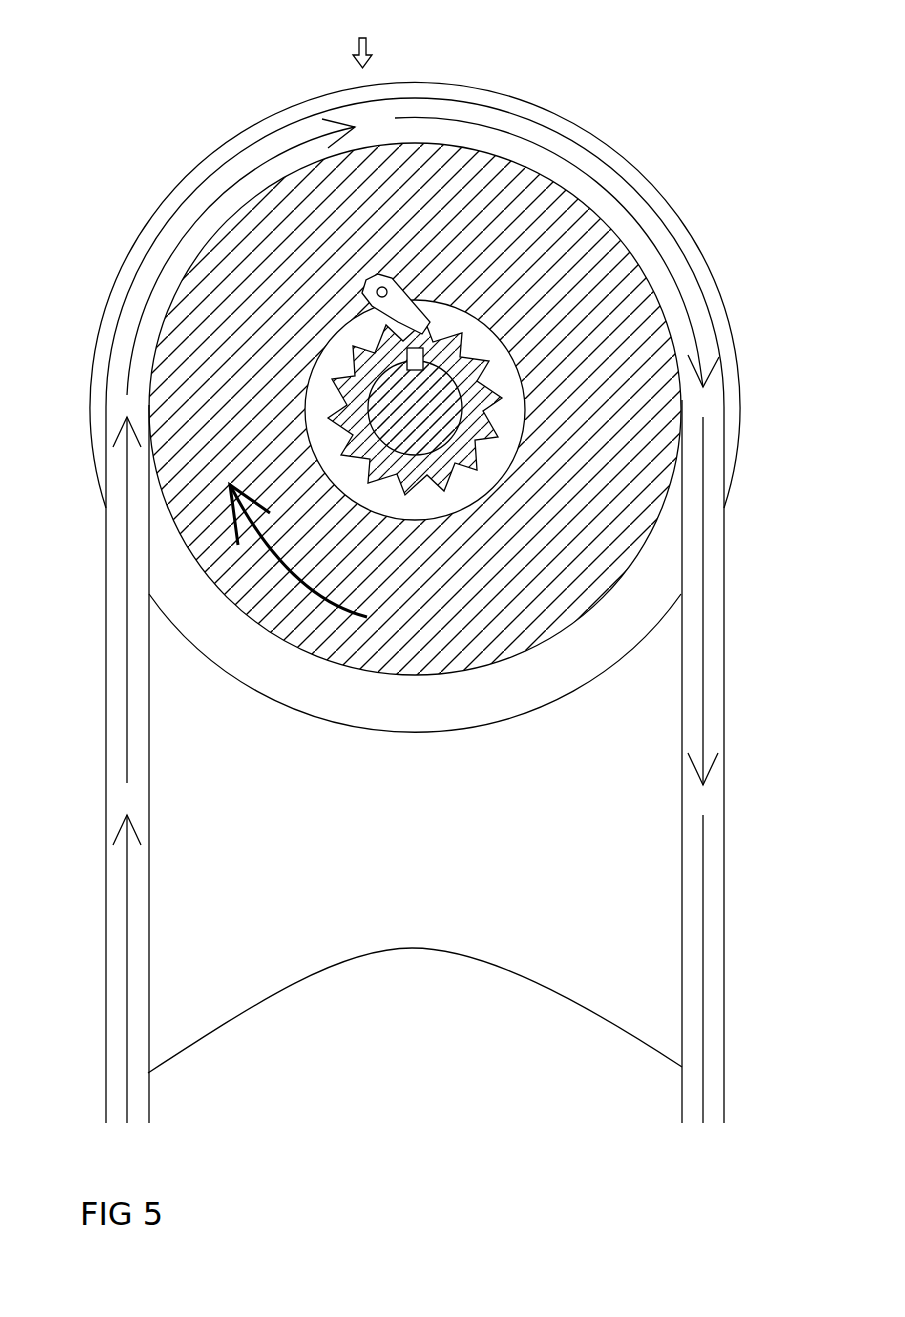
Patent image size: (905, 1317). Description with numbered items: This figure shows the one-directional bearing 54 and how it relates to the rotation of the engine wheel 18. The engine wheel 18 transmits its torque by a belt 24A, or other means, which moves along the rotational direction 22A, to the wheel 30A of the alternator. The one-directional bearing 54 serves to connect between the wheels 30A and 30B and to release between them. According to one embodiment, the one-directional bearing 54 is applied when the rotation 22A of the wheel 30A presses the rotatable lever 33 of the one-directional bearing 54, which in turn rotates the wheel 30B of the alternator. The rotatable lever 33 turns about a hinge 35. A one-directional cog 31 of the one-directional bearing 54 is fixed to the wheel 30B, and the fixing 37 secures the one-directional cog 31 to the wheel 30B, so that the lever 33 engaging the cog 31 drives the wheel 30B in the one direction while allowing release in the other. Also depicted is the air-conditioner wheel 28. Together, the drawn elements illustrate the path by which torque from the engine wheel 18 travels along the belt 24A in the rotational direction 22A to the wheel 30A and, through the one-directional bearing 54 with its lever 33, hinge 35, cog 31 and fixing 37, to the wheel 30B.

The engine wheel 18 is at (498, 1028).
The rotational direction 22A is at (293, 580).
The belt 24A is at (715, 620).
The air-conditioner wheel 28 is at (712, 268).
The wheel of alternator 30A is at (488, 610).
The wheel of alternator 30B is at (423, 360).
The one-directional cog 31 is at (367, 393).
The rotatable lever 33 is at (410, 312).
The hinge 35 is at (373, 283).
The fixing 37 is at (425, 403).
The one-directional bearing 54 is at (360, 40).